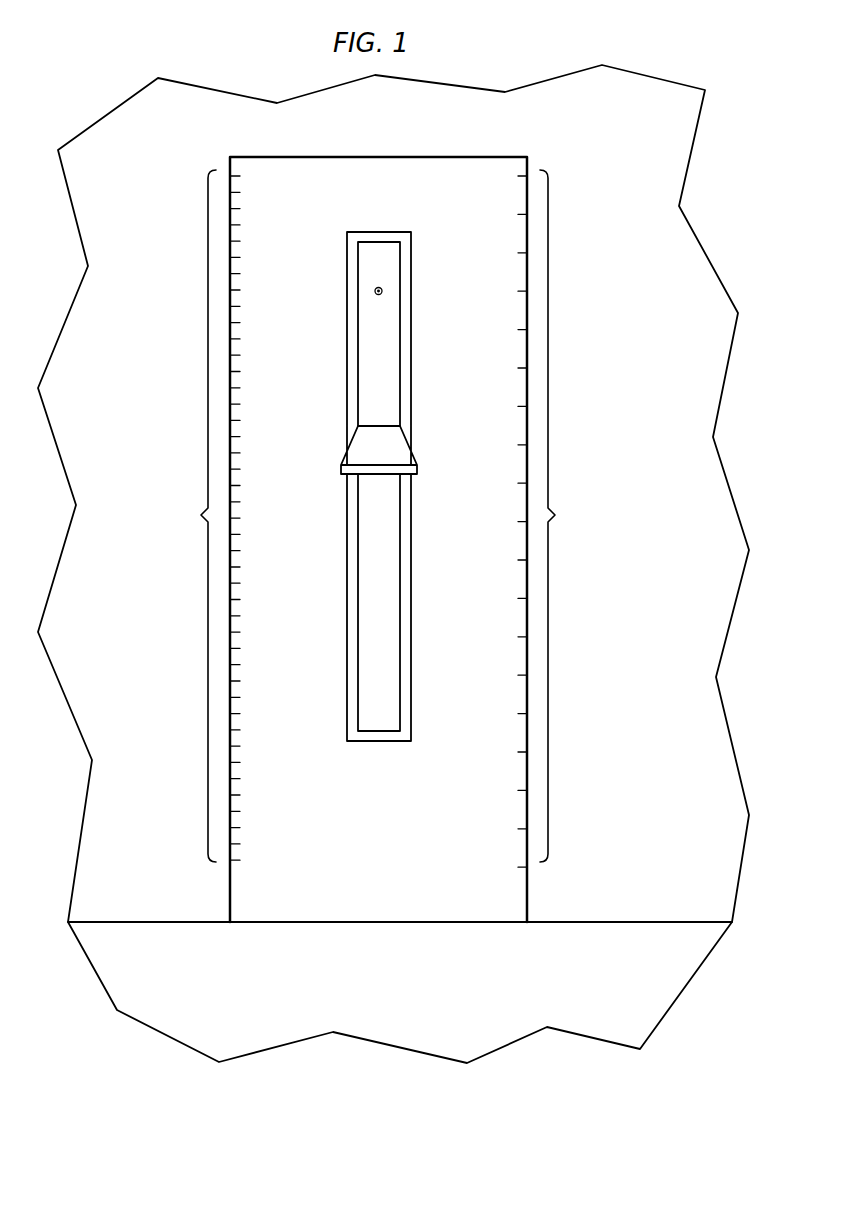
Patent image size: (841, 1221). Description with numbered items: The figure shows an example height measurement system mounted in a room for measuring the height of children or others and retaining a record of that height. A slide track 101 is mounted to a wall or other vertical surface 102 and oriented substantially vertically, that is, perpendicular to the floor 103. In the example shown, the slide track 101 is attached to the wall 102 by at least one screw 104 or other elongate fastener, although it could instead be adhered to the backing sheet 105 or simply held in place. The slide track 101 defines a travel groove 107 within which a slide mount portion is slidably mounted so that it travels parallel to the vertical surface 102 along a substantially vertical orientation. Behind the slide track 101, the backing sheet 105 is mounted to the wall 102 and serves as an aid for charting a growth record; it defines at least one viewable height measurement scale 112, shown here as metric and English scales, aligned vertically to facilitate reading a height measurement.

The slide track 101 is at (407, 486).
The vertical surface 102 is at (393, 564).
The floor 103 is at (400, 959).
The screw 104 is at (424, 278).
The backing sheet 105 is at (378, 539).
The travel groove 107 is at (341, 486).
The height measurement scale 112 is at (374, 520).